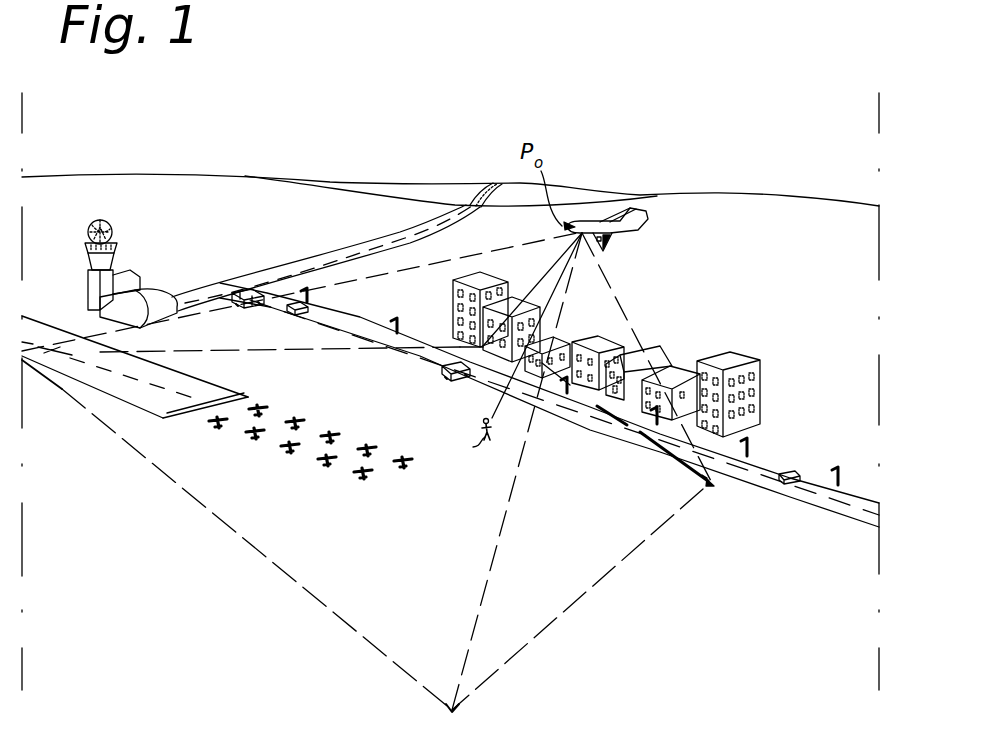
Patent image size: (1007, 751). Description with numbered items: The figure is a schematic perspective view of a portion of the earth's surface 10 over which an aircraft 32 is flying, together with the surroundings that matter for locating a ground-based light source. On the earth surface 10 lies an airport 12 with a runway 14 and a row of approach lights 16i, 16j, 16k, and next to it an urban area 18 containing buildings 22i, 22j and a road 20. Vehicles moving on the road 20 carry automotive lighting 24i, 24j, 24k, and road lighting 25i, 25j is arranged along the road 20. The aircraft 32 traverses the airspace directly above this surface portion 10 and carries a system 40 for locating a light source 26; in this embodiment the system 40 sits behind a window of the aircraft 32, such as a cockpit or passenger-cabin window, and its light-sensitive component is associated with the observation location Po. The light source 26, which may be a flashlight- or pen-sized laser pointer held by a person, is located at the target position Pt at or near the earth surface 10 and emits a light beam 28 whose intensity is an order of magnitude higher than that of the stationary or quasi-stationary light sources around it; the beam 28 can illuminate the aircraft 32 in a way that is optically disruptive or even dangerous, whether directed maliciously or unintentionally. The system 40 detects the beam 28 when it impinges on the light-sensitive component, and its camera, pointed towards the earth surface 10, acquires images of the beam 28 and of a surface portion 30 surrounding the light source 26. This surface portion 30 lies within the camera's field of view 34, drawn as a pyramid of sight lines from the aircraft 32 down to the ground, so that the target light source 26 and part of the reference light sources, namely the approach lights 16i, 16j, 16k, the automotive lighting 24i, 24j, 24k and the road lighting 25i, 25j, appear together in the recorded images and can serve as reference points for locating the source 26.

The earth's surface 10 is at (297, 181).
The airport 12 is at (128, 264).
The runway 14 is at (103, 382).
The approach light 16i is at (360, 478).
The approach light 16j is at (316, 466).
The approach light 16k is at (287, 449).
The urban area 18 is at (636, 337).
The road 20 is at (765, 468).
The building 22i is at (744, 357).
The building 22j is at (681, 372).
The automotive lighting 24i is at (252, 307).
The automotive lighting 24j is at (302, 302).
The automotive lighting 24k is at (443, 374).
The road lighting 25i is at (839, 470).
The road lighting 25j is at (749, 442).
The light source 26 is at (490, 423).
The light beam 28 is at (553, 292).
The surface portion 30 is at (689, 628).
The aircraft 32 is at (610, 199).
The field of view 34 is at (487, 678).
The system 40 is at (593, 222).